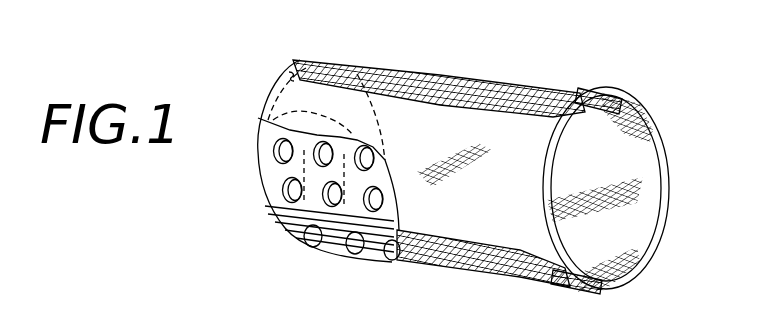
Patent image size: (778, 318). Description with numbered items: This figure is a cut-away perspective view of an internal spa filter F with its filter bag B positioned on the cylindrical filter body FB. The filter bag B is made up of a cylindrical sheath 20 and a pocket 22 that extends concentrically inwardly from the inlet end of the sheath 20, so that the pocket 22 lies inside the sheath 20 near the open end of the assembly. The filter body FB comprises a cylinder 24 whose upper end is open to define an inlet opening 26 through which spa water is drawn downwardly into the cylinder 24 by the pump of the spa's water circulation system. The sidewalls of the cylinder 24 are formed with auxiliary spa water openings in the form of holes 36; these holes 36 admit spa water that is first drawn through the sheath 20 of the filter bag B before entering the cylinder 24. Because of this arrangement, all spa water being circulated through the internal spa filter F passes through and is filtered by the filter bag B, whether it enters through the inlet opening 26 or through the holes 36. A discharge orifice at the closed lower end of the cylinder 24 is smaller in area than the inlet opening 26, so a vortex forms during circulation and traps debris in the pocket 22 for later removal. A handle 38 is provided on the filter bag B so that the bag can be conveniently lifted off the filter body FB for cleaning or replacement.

The cylindrical sheath 20 is at (392, 74).
The pocket 22 is at (651, 194).
The cylinder 24 is at (365, 222).
The inlet opening 26 is at (292, 76).
The holes 36 is at (281, 153).
The handle 38 is at (572, 255).
The internal spa filter F is at (483, 82).
The cylindrical filter body FB is at (272, 199).
The filter bag B is at (424, 152).